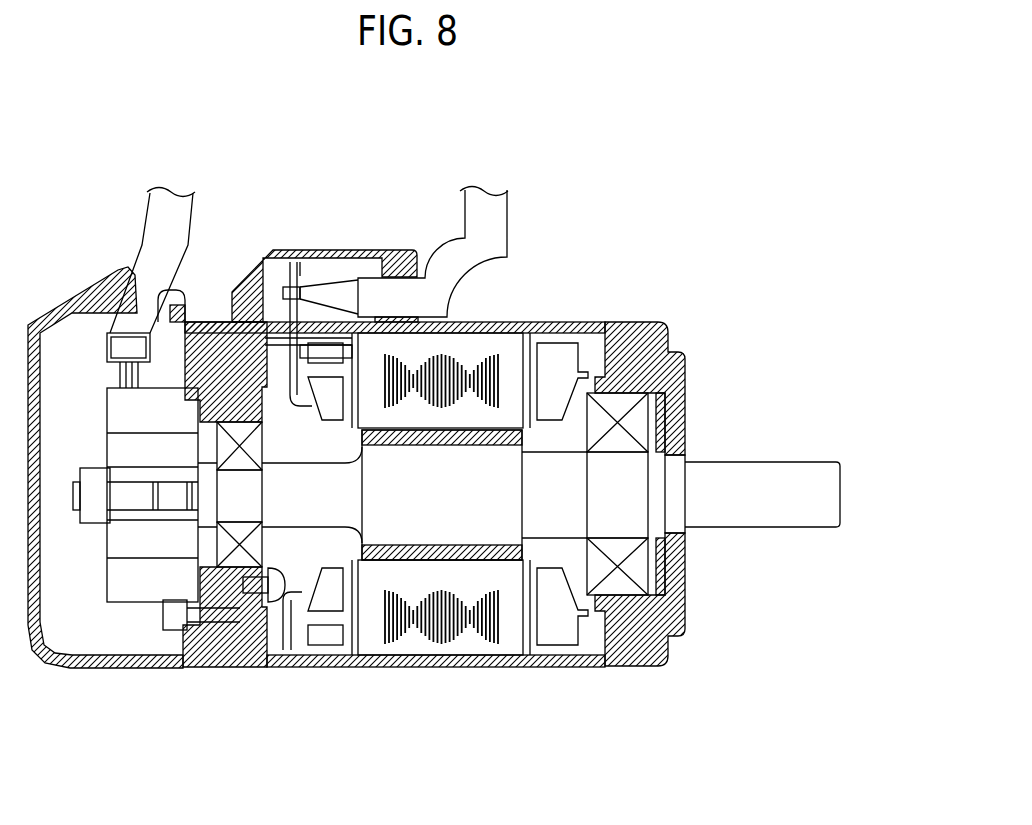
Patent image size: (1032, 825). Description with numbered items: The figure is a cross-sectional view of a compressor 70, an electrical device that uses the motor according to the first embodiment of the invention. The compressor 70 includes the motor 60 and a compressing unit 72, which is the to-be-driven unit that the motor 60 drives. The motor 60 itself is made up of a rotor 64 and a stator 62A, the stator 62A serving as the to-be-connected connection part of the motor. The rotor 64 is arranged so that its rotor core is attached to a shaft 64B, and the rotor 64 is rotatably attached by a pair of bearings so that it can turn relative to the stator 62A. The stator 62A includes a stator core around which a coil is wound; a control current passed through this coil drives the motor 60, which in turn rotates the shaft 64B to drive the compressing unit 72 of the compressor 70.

The motor 60 is at (505, 345).
The stator 62A is at (488, 647).
The rotor 64 is at (508, 463).
The shaft 64B is at (712, 480).
The compressor 70 is at (665, 323).
The compressing unit 72 is at (140, 575).